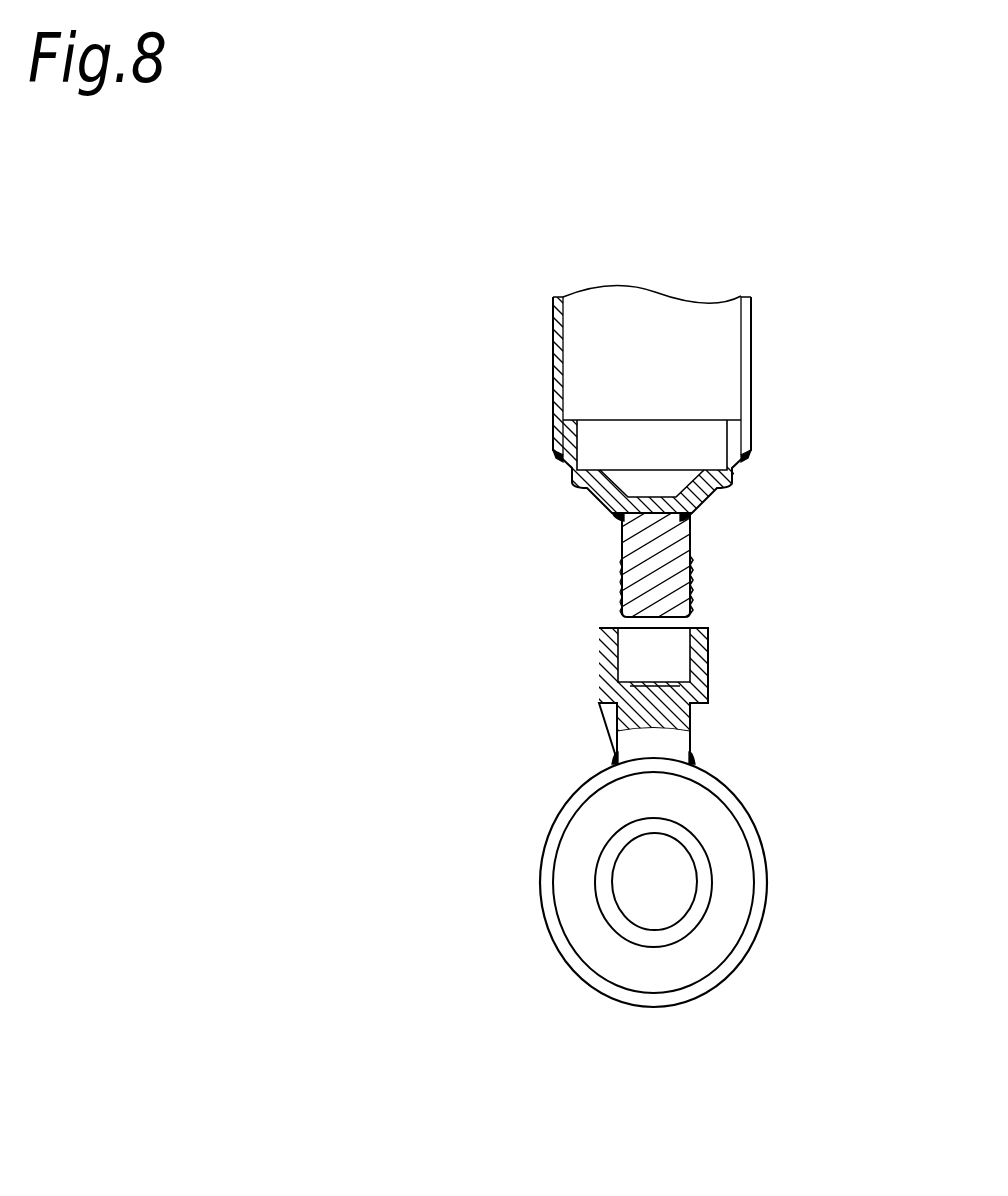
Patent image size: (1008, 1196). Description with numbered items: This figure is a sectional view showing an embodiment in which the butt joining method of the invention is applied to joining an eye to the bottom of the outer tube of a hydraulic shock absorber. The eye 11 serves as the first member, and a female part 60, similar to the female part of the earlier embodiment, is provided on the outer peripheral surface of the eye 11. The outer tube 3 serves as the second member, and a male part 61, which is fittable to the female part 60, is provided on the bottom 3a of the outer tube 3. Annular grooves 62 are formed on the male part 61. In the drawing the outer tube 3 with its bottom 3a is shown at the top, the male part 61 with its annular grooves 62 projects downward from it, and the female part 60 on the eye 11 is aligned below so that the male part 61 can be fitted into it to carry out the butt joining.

The outer tube 3 is at (553, 338).
The bottom 3a is at (657, 497).
The male part 61 is at (677, 542).
The annular grooves 62 is at (618, 598).
The female part 60 is at (697, 687).
The eye 11 is at (767, 877).